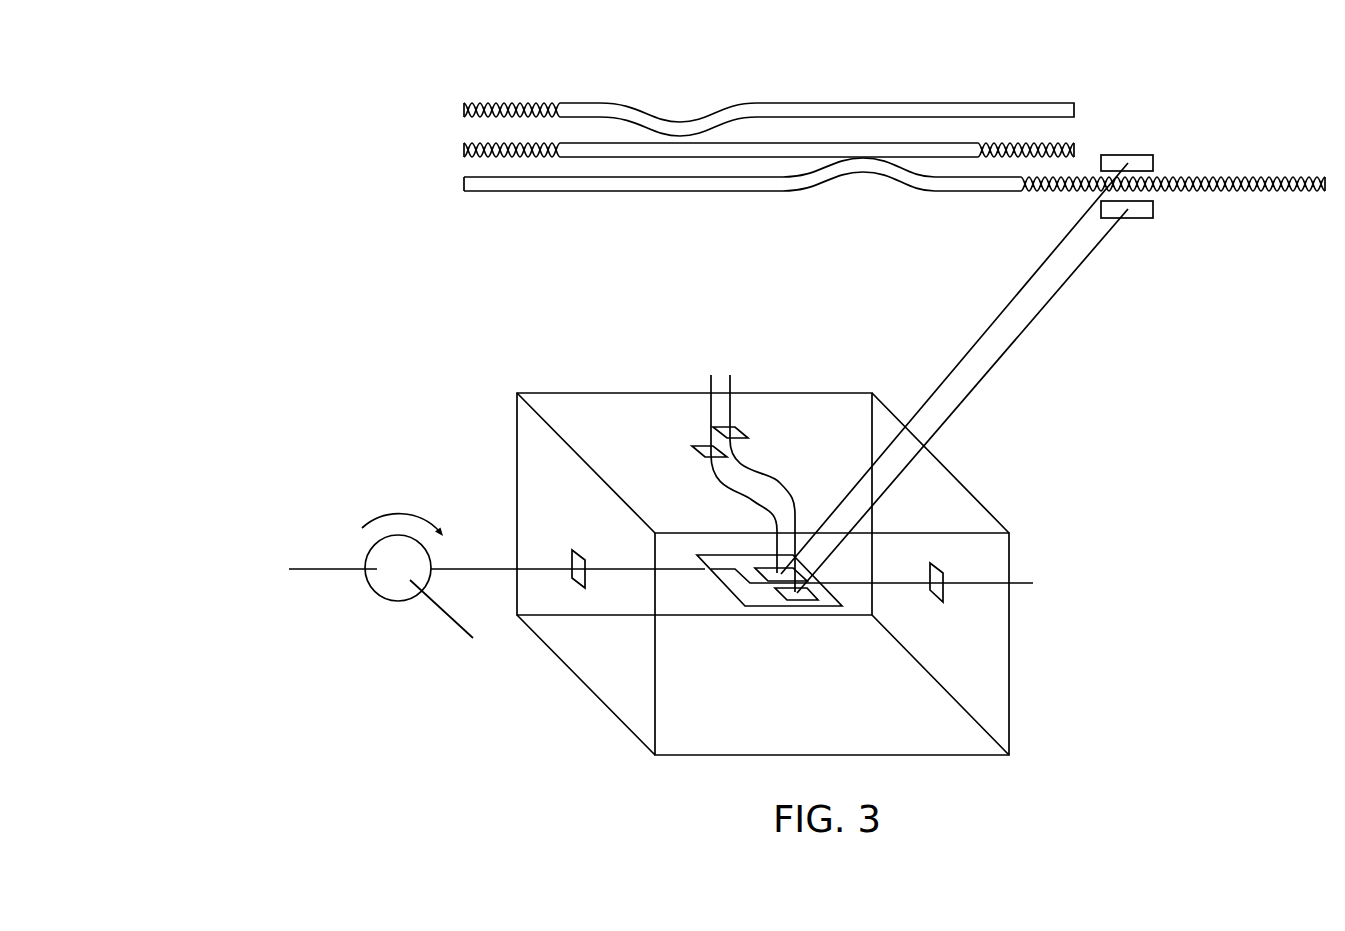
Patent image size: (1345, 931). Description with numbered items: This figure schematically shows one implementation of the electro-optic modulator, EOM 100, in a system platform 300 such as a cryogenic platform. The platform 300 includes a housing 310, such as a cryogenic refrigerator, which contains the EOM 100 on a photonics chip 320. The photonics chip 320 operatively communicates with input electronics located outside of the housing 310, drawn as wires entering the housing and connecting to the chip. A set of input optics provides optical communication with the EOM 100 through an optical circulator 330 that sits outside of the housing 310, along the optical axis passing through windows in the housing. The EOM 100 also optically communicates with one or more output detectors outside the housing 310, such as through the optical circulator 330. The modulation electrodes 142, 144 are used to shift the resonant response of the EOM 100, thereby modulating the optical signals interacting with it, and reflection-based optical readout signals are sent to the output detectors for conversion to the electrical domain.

The EOM 100 is at (684, 100).
The modulation electrode 142 is at (1153, 161).
The modulation electrode 144 is at (1153, 209).
The system platform 300 is at (481, 445).
The housing 310 is at (1009, 697).
The photonics chip 320 is at (773, 606).
The optical circulator 330 is at (383, 588).